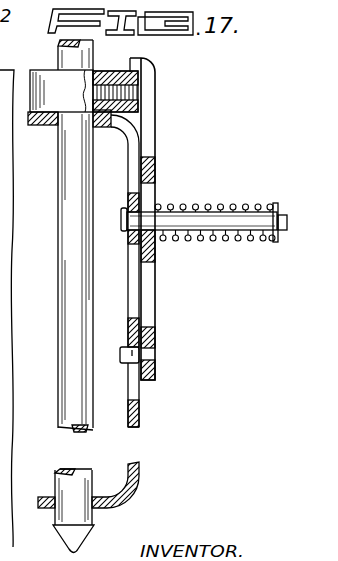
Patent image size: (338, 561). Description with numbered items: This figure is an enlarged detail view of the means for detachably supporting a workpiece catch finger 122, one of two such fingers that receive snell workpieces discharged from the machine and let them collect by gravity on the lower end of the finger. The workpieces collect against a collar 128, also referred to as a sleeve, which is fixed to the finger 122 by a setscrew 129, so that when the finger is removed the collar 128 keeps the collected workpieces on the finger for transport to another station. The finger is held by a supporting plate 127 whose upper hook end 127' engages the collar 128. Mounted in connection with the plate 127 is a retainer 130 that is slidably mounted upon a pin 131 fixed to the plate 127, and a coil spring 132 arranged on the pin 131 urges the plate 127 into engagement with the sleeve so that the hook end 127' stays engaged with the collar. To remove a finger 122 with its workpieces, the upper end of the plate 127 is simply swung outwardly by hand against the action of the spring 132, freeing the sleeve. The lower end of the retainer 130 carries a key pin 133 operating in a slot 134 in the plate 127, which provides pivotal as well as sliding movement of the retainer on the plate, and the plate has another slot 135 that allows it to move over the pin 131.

The workpiece catch finger 122 is at (78, 293).
The supporting plate 127 is at (118, 334).
The upper hook end of the plate 127' is at (175, 58).
The collar 128 is at (47, 126).
The setscrew 129 is at (137, 90).
The retainer 130 is at (157, 127).
The pin 131 is at (228, 226).
The coil spring 132 is at (222, 205).
The key pin 133 is at (154, 333).
The slot 134 is at (130, 397).
The slot 135 is at (153, 186).